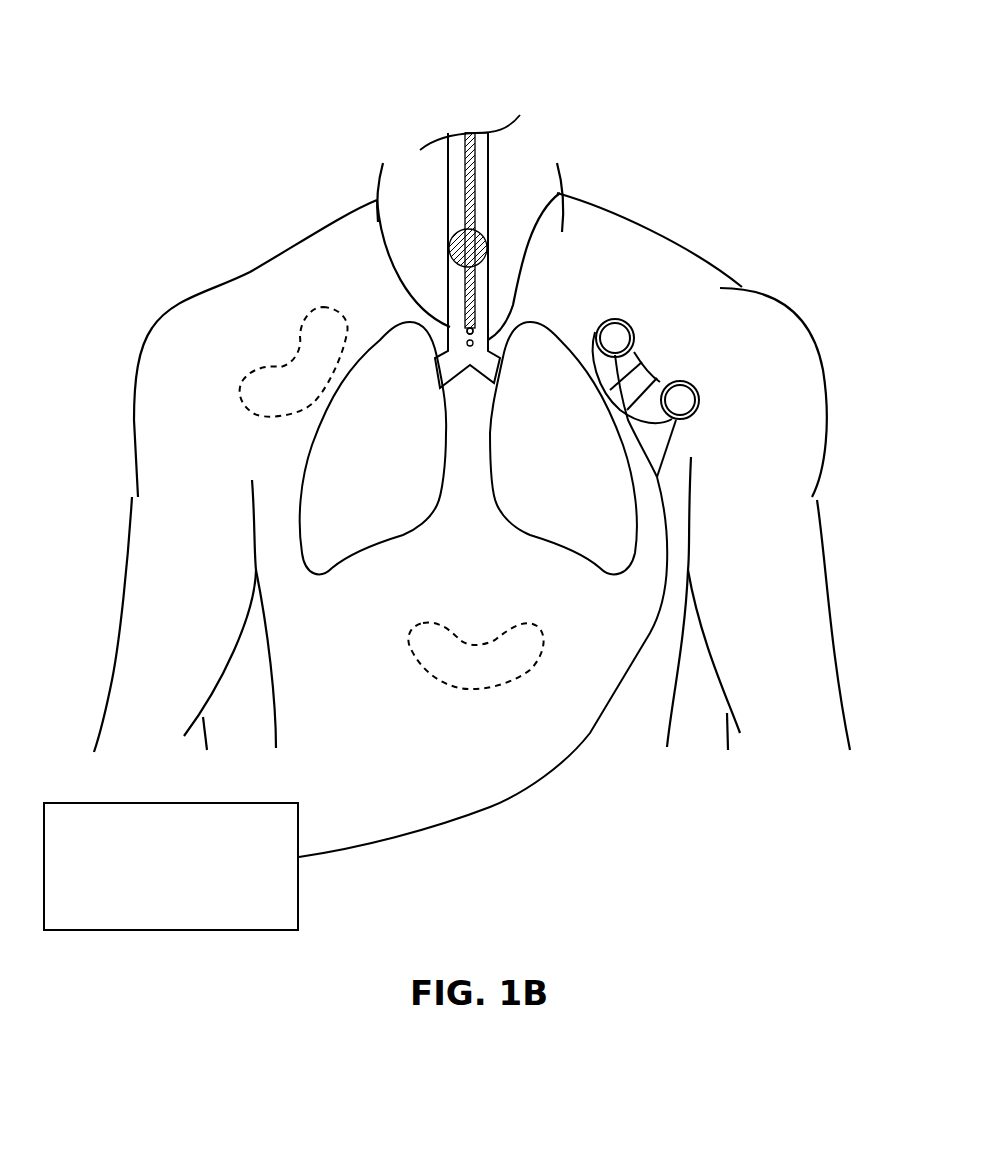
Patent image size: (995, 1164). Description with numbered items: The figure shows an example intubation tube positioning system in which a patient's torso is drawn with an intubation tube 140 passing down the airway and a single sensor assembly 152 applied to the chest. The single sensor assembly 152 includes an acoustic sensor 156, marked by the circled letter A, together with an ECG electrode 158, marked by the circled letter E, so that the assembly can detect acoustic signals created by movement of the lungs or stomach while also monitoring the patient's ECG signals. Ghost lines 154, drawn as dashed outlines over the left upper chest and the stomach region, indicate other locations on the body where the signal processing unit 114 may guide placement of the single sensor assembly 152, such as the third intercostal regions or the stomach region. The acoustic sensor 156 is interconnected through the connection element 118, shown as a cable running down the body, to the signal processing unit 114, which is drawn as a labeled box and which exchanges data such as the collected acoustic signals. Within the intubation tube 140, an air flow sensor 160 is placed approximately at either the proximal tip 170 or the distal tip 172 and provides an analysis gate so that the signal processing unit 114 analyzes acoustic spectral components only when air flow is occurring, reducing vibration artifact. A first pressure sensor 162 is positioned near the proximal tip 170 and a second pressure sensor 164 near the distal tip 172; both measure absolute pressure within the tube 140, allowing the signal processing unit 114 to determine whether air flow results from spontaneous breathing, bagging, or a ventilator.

The signal processing unit 114 is at (298, 905).
The connection element 118 is at (510, 797).
The intubation tube 140 is at (461, 197).
The single sensor assembly 152 is at (617, 316).
The ghost lines 154 is at (280, 365).
The acoustic sensor 156 is at (636, 342).
The ECG electrode 158 is at (700, 402).
The air flow sensor 160 is at (562, 192).
The first pressure sensor 162 is at (492, 138).
The second pressure sensor 164 is at (522, 322).
The proximal tip 170 is at (462, 129).
The distal tip 172 is at (448, 329).